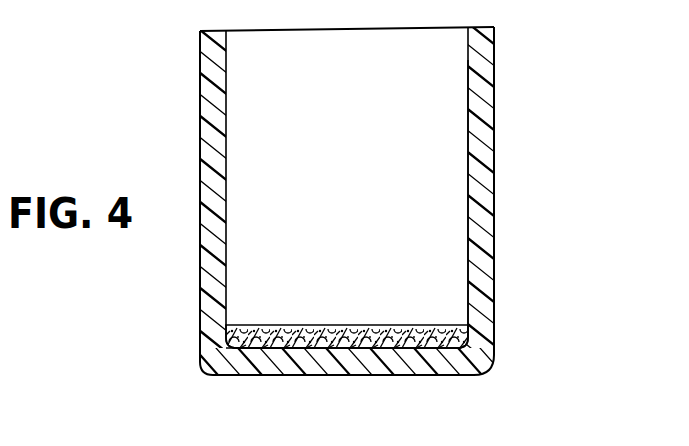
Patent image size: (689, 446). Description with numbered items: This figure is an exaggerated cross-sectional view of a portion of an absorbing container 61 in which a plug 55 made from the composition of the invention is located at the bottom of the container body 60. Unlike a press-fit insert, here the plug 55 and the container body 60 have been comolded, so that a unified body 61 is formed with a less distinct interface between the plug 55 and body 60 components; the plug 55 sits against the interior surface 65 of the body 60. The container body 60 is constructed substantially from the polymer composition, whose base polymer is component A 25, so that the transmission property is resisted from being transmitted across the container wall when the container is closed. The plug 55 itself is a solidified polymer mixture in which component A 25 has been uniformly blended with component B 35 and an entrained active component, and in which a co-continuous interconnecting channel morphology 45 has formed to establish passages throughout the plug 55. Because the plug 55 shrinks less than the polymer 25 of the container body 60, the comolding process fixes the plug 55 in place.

The container 61 is at (508, 100).
The container body 60 is at (494, 231).
The interior surface 65 is at (468, 265).
The component A 25 is at (200, 238).
The plug 55 is at (380, 325).
The component B 35 is at (285, 350).
The co-continuous interconnecting channel morphology 45 is at (320, 350).